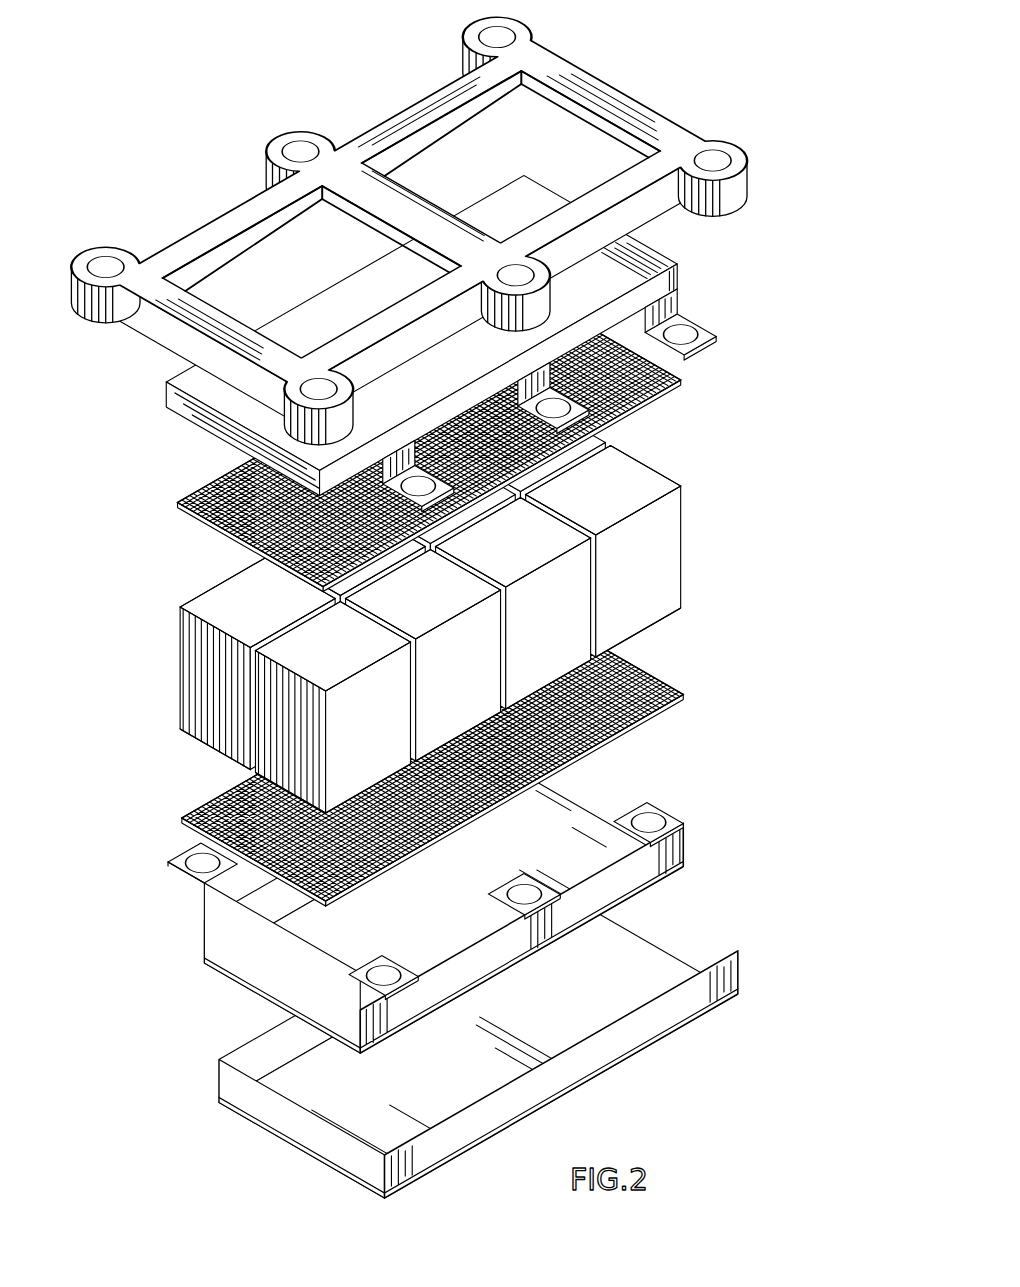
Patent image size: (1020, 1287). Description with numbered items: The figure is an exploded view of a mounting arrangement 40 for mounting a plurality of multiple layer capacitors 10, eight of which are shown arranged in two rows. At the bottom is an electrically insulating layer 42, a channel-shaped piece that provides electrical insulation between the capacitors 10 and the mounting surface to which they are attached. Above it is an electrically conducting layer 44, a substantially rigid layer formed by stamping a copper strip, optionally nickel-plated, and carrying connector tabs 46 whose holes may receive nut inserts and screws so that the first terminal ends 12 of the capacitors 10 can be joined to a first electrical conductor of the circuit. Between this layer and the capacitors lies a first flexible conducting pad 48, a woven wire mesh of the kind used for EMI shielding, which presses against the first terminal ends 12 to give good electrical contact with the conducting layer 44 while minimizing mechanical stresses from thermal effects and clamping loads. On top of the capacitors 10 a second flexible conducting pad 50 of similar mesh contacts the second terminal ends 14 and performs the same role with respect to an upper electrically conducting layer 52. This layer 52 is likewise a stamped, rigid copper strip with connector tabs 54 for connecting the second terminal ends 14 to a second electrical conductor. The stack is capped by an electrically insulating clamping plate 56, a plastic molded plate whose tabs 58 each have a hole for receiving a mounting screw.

The capacitor 10 is at (187, 718).
The first terminal end 12 is at (222, 757).
The second terminal end 14 is at (557, 538).
The mounting arrangement 40 is at (433, 603).
The electrically insulating layer 42 is at (687, 1007).
The electrically conducting layer 44 is at (429, 894).
The connector tab 46 is at (673, 813).
The first flexible conducting pad 48 is at (648, 727).
The second flexible conducting pad 50 is at (665, 393).
The electrically conducting layer 52 is at (465, 348).
The connector tab 54 is at (684, 352).
The electrically insulating clamping plate 56 is at (433, 227).
The tab 58 is at (738, 206).